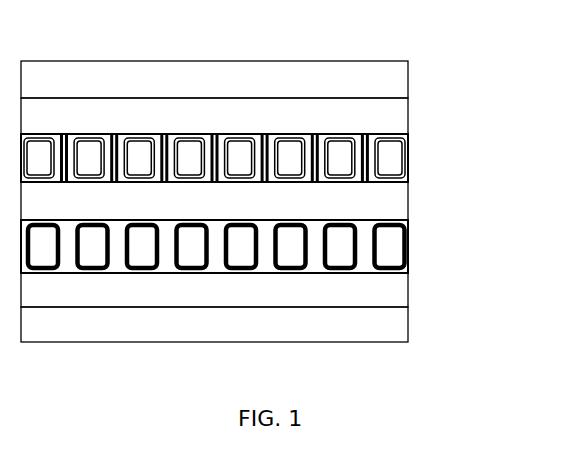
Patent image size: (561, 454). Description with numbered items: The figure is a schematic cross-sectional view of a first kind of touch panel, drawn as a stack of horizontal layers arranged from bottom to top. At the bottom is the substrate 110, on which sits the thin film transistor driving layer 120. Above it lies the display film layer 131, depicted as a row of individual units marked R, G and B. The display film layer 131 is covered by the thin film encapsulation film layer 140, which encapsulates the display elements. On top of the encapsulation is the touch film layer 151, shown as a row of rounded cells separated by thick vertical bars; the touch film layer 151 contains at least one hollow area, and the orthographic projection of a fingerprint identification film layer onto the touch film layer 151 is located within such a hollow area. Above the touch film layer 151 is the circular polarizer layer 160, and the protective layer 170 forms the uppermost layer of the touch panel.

The substrate 110 is at (408, 328).
The thin film transistor driving layer 120 is at (408, 283).
The display film layer 131 is at (408, 238).
The thin film encapsulation film layer 140 is at (408, 203).
The touch film layer 151 is at (408, 157).
The circular polarizer layer 160 is at (408, 112).
The protective layer 170 is at (408, 75).